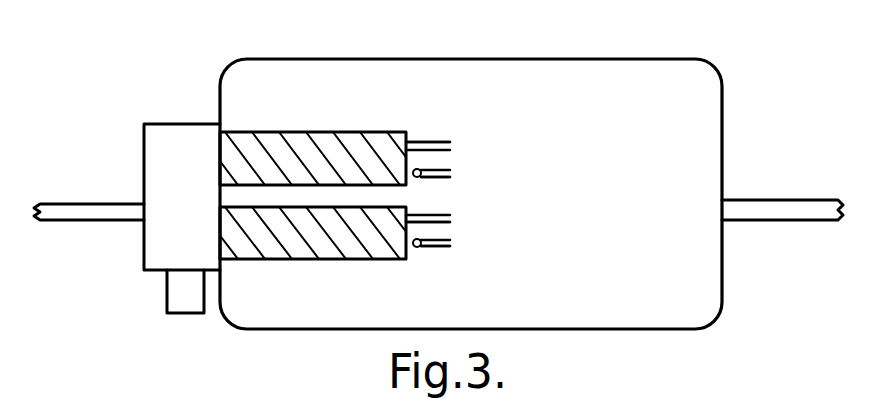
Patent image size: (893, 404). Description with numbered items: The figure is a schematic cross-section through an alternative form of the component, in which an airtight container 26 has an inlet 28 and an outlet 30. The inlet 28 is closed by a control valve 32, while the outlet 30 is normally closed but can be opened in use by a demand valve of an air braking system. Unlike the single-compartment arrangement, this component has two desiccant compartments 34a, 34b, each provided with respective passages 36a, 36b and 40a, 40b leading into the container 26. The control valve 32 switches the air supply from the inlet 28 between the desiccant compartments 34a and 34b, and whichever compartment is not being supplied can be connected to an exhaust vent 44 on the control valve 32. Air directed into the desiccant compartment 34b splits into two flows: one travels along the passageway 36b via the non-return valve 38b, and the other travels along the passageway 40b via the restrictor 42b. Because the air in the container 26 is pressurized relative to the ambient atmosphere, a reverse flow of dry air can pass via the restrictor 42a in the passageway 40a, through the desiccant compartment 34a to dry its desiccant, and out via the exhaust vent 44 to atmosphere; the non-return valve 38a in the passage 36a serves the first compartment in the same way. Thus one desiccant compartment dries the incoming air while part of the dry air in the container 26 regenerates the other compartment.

The airtight container 26 is at (713, 62).
The inlet 28 is at (78, 203).
The outlet 30 is at (812, 210).
The control valve 32 is at (147, 256).
The desiccant compartment 34a is at (282, 132).
The desiccant compartment 34b is at (297, 260).
The passage 36a is at (434, 180).
The passageway 36b is at (437, 248).
The non-return valve 38a is at (430, 168).
The non-return valve 38b is at (428, 253).
The passageway 40a is at (445, 140).
The passageway 40b is at (450, 233).
The restrictor 42a is at (430, 136).
The restrictor 42b is at (432, 214).
The exhaust vent 44 is at (187, 300).